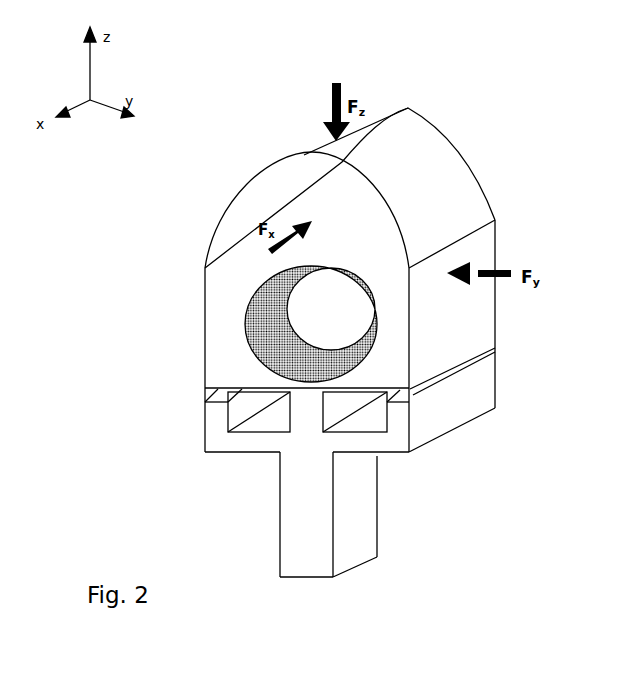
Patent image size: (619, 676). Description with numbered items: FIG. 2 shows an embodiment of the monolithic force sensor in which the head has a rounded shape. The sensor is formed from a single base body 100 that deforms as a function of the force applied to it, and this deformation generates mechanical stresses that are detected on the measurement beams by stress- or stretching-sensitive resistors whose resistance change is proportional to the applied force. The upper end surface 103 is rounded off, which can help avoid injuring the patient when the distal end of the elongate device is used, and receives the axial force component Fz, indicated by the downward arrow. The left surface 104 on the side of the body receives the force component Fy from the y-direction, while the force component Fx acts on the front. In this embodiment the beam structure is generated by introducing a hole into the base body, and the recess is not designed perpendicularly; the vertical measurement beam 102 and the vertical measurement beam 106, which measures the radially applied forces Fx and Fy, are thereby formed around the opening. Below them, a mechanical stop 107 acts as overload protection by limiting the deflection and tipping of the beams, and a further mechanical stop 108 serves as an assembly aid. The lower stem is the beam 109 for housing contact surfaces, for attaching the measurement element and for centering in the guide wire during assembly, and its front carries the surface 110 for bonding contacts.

The base body 100 is at (243, 236).
The vertical measurement beam 102 is at (397, 342).
The end surface 103 is at (410, 183).
The left surface 104 is at (457, 287).
The vertical measurement beam 106 is at (310, 423).
The mechanical stop 107 is at (413, 396).
The mechanical stop 108 is at (400, 460).
The beam 109 is at (347, 503).
The surface for bonding contacts 110 is at (300, 520).